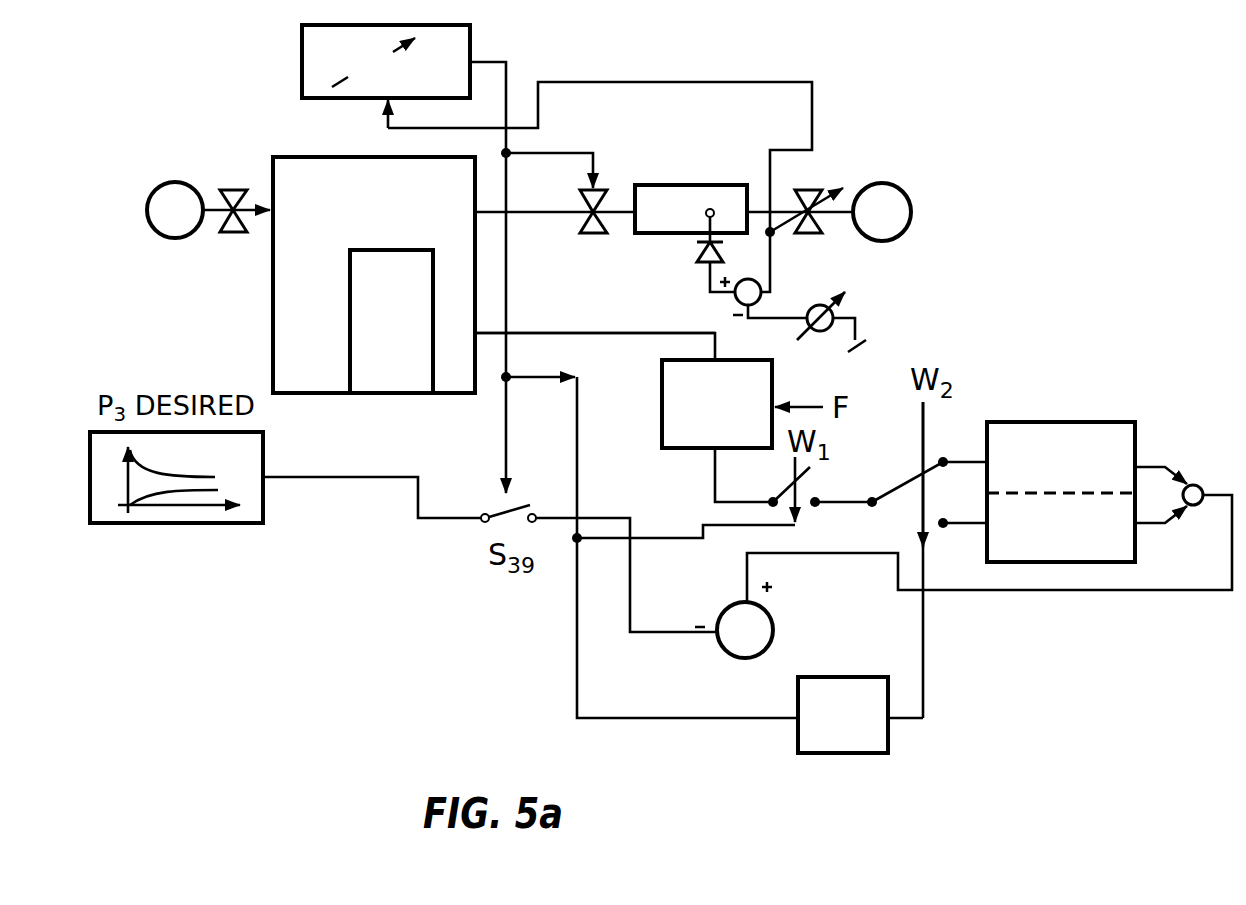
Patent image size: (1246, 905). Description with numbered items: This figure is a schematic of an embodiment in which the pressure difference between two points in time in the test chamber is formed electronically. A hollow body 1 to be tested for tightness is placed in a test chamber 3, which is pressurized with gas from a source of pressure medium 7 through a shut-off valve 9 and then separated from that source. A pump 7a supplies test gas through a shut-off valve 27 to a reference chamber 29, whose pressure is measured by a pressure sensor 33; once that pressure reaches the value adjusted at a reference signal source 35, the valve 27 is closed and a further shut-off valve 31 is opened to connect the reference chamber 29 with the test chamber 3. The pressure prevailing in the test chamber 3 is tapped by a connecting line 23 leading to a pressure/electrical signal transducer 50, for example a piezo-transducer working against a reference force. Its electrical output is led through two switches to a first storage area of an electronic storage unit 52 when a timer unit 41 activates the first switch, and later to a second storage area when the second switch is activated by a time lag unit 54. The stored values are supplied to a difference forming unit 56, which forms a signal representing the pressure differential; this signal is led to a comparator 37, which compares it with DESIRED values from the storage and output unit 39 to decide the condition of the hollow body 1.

The hollow body 1 is at (350, 318).
The test chamber 3 is at (273, 262).
The source of pressure medium 7 is at (182, 182).
The pump 7a is at (903, 188).
The shut-off valve 9 is at (236, 190).
The connecting line 23 is at (605, 332).
The shut-off valve 27 is at (822, 218).
The reference chamber 29 is at (688, 185).
The shut-off valve 31 is at (603, 180).
The pressure sensor 33 is at (700, 261).
The reference signal source 35 is at (821, 331).
The comparator 37 is at (773, 633).
The storage and output unit 39 is at (193, 523).
The timer unit 41 is at (302, 70).
The pressure/electrical signal transducer 50 is at (737, 360).
The electronic storage unit 52 is at (1105, 422).
The time lag unit 54 is at (862, 753).
The difference forming unit 56 is at (1196, 485).